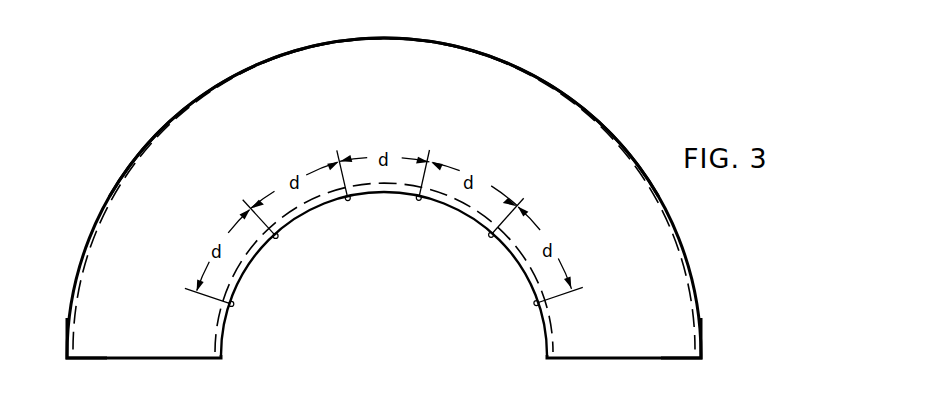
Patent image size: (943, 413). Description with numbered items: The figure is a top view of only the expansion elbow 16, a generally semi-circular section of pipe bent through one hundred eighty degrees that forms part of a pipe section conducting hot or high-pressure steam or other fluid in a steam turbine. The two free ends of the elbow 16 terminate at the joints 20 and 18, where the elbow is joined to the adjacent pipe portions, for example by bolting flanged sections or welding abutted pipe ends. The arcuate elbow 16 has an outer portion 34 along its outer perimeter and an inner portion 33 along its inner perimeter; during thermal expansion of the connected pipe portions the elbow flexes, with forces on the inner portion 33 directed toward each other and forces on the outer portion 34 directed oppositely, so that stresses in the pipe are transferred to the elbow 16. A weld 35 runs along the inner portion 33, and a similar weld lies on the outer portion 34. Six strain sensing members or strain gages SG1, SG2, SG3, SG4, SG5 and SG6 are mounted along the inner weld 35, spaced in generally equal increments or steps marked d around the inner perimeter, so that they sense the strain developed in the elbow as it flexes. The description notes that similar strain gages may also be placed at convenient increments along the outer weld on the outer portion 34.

The expansion elbow 16 is at (599, 86).
The outer portion 34 is at (460, 46).
The weld 35 is at (304, 218).
The inner portion 33 is at (529, 268).
The joint 20 is at (67, 358).
The joint 18 is at (701, 358).
The strain gage SG1 is at (231, 306).
The strain gage SG2 is at (276, 238).
The strain gage SG3 is at (348, 200).
The strain gage SG4 is at (419, 200).
The strain gage SG5 is at (491, 237).
The strain gage SG6 is at (536, 305).